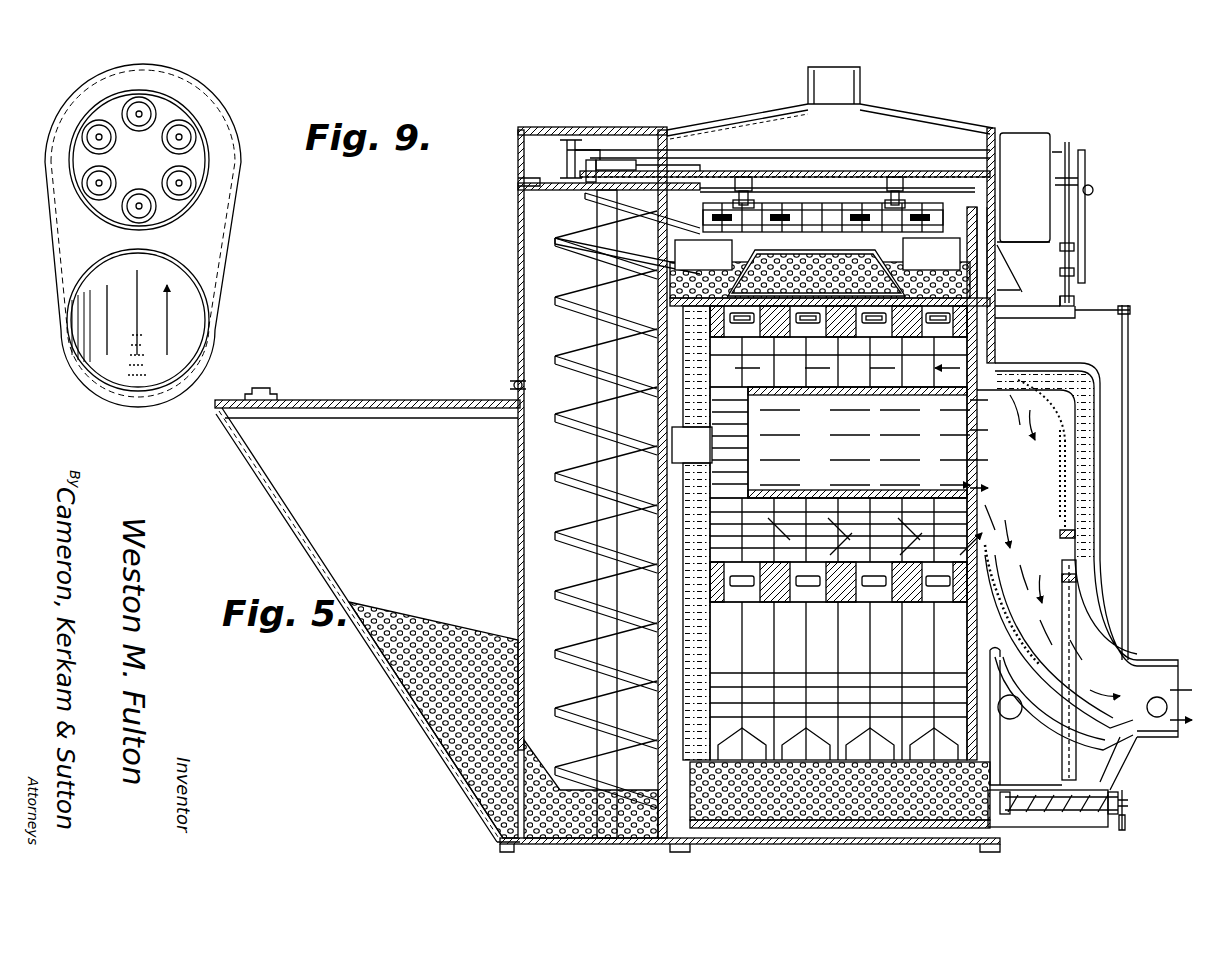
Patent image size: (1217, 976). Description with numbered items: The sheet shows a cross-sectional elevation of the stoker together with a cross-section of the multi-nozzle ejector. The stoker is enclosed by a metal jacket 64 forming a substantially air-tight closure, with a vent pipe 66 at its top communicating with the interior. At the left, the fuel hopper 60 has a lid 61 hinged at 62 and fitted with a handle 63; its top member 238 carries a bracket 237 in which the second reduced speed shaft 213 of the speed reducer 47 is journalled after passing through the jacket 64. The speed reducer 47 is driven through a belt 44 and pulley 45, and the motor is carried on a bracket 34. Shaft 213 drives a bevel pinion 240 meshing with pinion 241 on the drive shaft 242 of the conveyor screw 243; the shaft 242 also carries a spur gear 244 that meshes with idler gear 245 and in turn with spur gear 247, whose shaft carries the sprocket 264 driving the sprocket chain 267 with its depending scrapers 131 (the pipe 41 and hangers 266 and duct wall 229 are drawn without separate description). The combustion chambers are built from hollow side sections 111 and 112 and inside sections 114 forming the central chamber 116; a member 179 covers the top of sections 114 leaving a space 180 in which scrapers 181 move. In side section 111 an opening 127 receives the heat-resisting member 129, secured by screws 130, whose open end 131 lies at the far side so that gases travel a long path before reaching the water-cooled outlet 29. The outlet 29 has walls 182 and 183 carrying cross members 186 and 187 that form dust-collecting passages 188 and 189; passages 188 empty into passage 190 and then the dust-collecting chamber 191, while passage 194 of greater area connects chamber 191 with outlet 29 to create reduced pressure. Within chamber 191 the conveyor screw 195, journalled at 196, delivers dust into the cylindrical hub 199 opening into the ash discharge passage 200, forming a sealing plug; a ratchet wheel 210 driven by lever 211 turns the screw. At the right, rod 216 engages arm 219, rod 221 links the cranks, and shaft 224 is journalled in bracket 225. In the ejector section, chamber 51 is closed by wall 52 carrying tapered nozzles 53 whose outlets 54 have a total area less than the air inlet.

In FIG. 5, the stoker outlet 29 is at (1140, 660).
In FIG. 5, the bracket 34 is at (1023, 269).
In FIG. 9, the pipe 41 is at (212, 345).
In FIG. 5, the belt 44 is at (1085, 158).
In FIG. 5, the pulley 45 is at (1090, 188).
In FIG. 5, the speed reducer 47 is at (1030, 133).
In FIG. 9, the chamber 51 is at (207, 142).
In FIG. 9, the wall 52 is at (196, 168).
In FIG. 9, the ejector nozzles 53 is at (190, 193).
In FIG. 9, the nozzle outlets 54 is at (182, 136).
In FIG. 5, the fuel hopper 60 is at (312, 537).
In FIG. 5, the lid 61 is at (370, 400).
In FIG. 5, the hinge 62 is at (514, 383).
In FIG. 5, the handle 63 is at (274, 393).
In FIG. 5, the metal jacket 64 is at (518, 300).
In FIG. 5, the vent pipe 66 is at (860, 95).
In FIG. 5, the hollow side section 111 is at (960, 655).
In FIG. 5, the hollow side section 112 is at (660, 410).
In FIG. 5, the inside hollow sections 114 is at (798, 300).
In FIG. 5, the central chamber 116 is at (825, 500).
In FIG. 5, the opening 127 is at (980, 420).
In FIG. 5, the member 129 is at (835, 396).
In FIG. 5, the screws 130 is at (955, 365).
In FIG. 5, the open end 131 is at (792, 446).
In FIG. 5, the member 179 is at (830, 262).
In FIG. 5, the space 180 is at (740, 262).
In FIG. 5, the scrapers 181 is at (680, 250).
In FIG. 5, the wall 182 is at (1000, 520).
In FIG. 5, the wall 183 is at (1052, 430).
In FIG. 5, the cross member 186 is at (1005, 575).
In FIG. 5, the cross member 187 is at (1058, 440).
In FIG. 5, the dust-collecting passages 188 is at (1012, 640).
In FIG. 5, the dust-collecting passages 189 is at (1096, 470).
In FIG. 5, the passage 190 is at (1125, 755).
In FIG. 5, the dust-collecting chamber 191 is at (1100, 780).
In FIG. 5, the passage 194 is at (1147, 707).
In FIG. 5, the conveyor screw 195 is at (1061, 820).
In FIG. 5, the journal 196 is at (1008, 815).
In FIG. 5, the cylindrical hub 199 is at (1010, 790).
In FIG. 5, the ash discharge passage 200 is at (940, 822).
In FIG. 5, the ratchet wheel 210 is at (1126, 826).
In FIG. 5, the lever 211 is at (1128, 805).
In FIG. 5, the second reduced speed shaft 213 is at (920, 191).
In FIG. 5, the rod 216 is at (1069, 222).
In FIG. 5, the arm 219 is at (1074, 300).
In FIG. 5, the rod 221 is at (1074, 273).
In FIG. 5, the shaft 224 is at (1100, 310).
In FIG. 5, the bracket 225 is at (1045, 320).
In FIG. 5, the duct wall 229 is at (1100, 515).
In FIG. 5, the bracket 237 is at (560, 160).
In FIG. 5, the top member 238 is at (530, 182).
In FIG. 5, the bevel pinion 240 is at (590, 160).
In FIG. 5, the pinion 241 is at (618, 160).
In FIG. 5, the drive shaft 242 is at (625, 514).
In FIG. 5, the conveyor screw 243 is at (555, 241).
In FIG. 5, the spur gear 244 is at (648, 168).
In FIG. 5, the idler gear 245 is at (662, 170).
In FIG. 5, the spur gear 247 is at (782, 171).
In FIG. 5, the sprocket 264 is at (800, 210).
In FIG. 5, the hanger 266 is at (743, 177).
In FIG. 5, the sprocket chain 267 is at (845, 210).